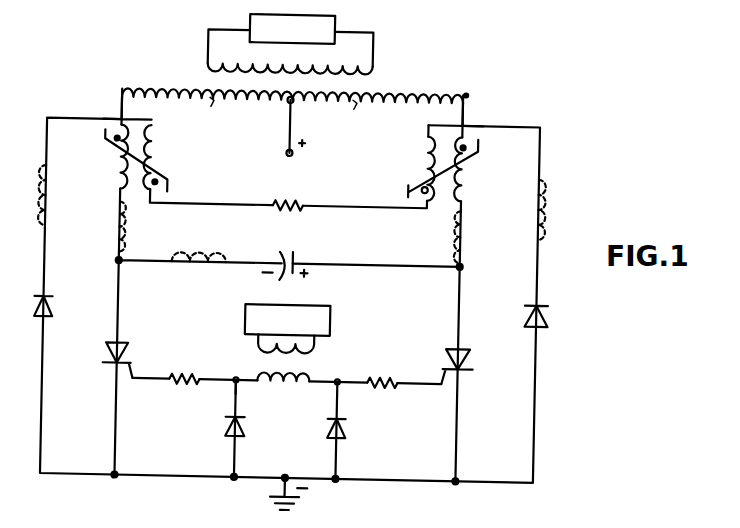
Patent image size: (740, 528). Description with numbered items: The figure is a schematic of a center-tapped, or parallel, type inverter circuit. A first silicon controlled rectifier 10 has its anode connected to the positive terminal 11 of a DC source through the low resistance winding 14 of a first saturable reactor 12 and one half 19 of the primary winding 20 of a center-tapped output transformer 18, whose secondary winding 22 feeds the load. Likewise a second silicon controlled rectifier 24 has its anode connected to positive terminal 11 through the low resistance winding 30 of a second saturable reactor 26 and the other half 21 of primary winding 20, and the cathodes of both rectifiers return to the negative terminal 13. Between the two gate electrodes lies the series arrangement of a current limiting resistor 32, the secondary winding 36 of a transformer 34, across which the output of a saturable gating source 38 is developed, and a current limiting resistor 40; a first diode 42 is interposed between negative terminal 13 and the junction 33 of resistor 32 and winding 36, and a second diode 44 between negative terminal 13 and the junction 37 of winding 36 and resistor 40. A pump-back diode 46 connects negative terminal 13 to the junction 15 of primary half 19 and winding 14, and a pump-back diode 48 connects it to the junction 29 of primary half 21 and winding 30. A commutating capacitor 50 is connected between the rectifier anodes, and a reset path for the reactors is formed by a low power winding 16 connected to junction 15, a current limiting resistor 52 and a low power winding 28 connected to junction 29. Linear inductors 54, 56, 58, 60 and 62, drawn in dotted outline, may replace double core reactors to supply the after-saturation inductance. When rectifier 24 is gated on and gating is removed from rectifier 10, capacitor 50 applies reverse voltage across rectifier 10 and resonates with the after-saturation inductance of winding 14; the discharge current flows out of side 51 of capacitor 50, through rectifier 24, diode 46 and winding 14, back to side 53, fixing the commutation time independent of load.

The first silicon controlled rectifier 10 is at (136, 363).
The positive terminal 11 is at (282, 153).
The first saturable reactor 12 is at (144, 121).
The negative terminal 13 is at (289, 477).
The low resistance winding 14 is at (120, 174).
The junction 15 is at (116, 120).
The low power winding 16 is at (148, 152).
The center-tapped output transformer 18 is at (409, 78).
The half of primary winding 19 is at (217, 114).
The primary winding 20 is at (165, 85).
The other half of primary winding 21 is at (354, 117).
The secondary winding 22 is at (320, 65).
The second silicon controlled rectifier 24 is at (448, 359).
The second saturable reactor 26 is at (450, 121).
The low power winding 28 is at (429, 160).
The junction 29 is at (459, 125).
The low resistance winding 30 is at (462, 176).
The current limiting resistor 32 is at (179, 374).
The junction 33 is at (236, 381).
The transformer 34 is at (256, 372).
The secondary winding 36 is at (304, 376).
The junction 37 is at (339, 382).
The saturable gating source 38 is at (330, 312).
The current limiting resistor 40 is at (392, 372).
The first diode 42 is at (230, 438).
The second diode 44 is at (346, 439).
The pump-back diode 46 is at (49, 315).
The pump-back diode 48 is at (525, 313).
The commutating capacitor 50 is at (289, 247).
The side of capacitor 51 is at (293, 256).
The current limiting resistor 52 is at (283, 206).
The side of capacitor 53 is at (277, 255).
The linear inductor 54 is at (120, 253).
The linear inductor 56 is at (206, 237).
The linear inductor 58 is at (452, 248).
The linear inductor 60 is at (30, 208).
The linear inductor 62 is at (546, 185).